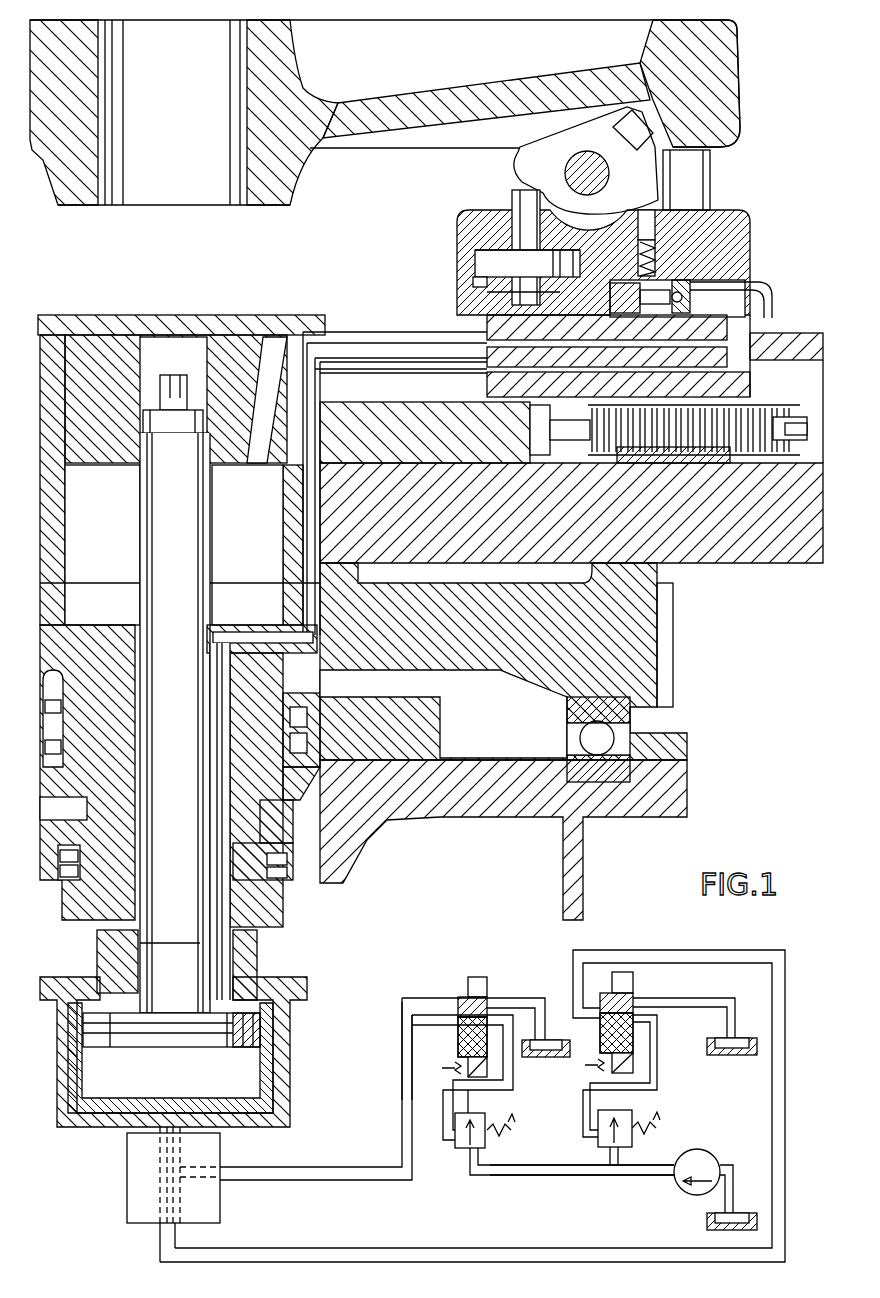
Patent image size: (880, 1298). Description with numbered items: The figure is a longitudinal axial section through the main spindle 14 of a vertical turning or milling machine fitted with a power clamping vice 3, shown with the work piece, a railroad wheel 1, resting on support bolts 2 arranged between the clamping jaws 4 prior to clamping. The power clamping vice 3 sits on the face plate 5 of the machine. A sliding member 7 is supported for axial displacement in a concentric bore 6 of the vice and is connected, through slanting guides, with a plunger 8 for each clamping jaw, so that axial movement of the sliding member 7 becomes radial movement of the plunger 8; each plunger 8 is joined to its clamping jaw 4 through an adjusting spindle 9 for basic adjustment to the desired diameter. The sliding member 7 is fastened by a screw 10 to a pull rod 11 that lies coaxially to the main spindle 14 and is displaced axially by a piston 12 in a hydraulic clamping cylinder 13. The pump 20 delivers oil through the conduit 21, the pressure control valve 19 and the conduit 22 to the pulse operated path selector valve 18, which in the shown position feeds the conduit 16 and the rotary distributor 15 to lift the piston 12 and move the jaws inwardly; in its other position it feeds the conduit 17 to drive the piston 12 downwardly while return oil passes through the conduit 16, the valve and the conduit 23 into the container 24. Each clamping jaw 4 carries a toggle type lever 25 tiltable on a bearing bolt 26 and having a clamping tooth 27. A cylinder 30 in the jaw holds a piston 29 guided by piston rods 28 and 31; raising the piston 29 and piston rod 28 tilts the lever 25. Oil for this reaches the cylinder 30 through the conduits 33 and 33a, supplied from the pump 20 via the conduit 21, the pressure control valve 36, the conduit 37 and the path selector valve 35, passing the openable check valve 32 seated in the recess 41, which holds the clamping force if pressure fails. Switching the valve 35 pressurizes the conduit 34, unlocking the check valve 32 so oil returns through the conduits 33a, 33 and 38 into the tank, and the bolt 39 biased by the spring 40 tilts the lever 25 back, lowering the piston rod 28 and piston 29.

The railroad wheel 1 is at (384, 63).
The support bolts 2 is at (697, 196).
The power clamping vice 3 is at (668, 548).
The clamping jaws 4 is at (742, 222).
The face plate 5 is at (648, 683).
The concentric bore 6 is at (254, 527).
The sliding member 7 is at (247, 335).
The plunger 8 is at (370, 433).
The adjusting spindle 9 is at (670, 447).
The screw 10 is at (162, 410).
The pull rod 11 is at (153, 520).
The piston 12 is at (270, 1031).
The clamping cylinder 13 is at (55, 987).
The main spindle 14 is at (253, 777).
The rotary distributor 15 is at (137, 1175).
The conduit 16 is at (325, 1247).
The conduit 17 is at (158, 1243).
The path selector valve 18 is at (622, 985).
The pressure control valve 19 is at (598, 1137).
The pump 20 is at (683, 1178).
The conduit 21 is at (578, 1175).
The conduit 22 is at (657, 1075).
The conduit 23 is at (660, 998).
The container 24 is at (555, 1040).
The toggle type lever 25 is at (522, 165).
The bearing bolt 26 is at (566, 175).
The clamping tooth 27 is at (620, 136).
The piston rod 28 is at (520, 200).
The piston 29 is at (490, 262).
The cylinder 30 is at (485, 278).
The piston rod 31 is at (520, 292).
The check valve 32 is at (700, 295).
The conduit 33 is at (405, 1185).
The conduit 33a is at (515, 318).
The conduit 34 is at (402, 1105).
The path selector valve 35 is at (462, 993).
The pressure control valve 36 is at (460, 1150).
The conduit 37 is at (515, 1080).
The conduit 38 is at (510, 998).
The bolt 39 is at (643, 218).
The spring 40 is at (700, 215).
The recess 41 is at (748, 254).